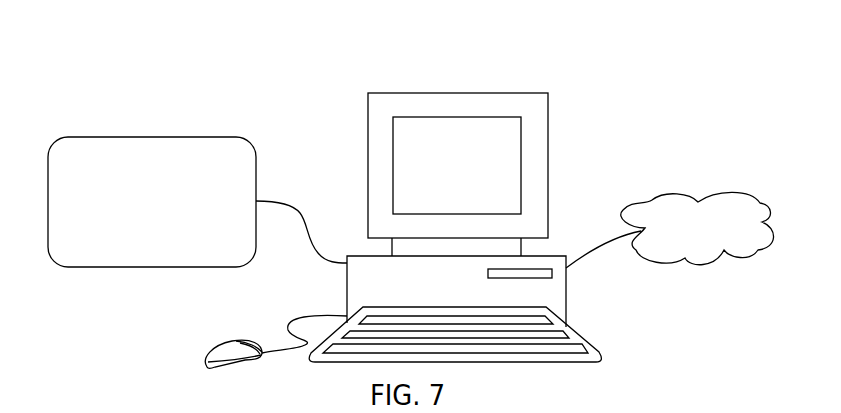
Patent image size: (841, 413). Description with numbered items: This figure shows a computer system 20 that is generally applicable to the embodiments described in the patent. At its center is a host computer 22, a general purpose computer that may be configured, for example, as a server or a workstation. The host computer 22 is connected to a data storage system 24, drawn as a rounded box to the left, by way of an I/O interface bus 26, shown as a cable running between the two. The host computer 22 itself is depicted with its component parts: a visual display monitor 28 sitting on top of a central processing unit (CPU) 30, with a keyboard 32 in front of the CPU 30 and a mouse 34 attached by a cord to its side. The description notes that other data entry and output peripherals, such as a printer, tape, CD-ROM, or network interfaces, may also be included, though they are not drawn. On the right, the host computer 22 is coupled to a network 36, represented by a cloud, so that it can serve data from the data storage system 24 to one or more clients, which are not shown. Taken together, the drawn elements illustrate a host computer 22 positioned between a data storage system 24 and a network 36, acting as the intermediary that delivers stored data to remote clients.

The computer system 20 is at (698, 77).
The host computer 22 is at (453, 84).
The data storage system 24 is at (160, 137).
The I/O interface bus 26 is at (297, 212).
The visual display monitor 28 is at (548, 131).
The central processing unit (CPU) 30 is at (566, 296).
The keyboard 32 is at (597, 349).
The mouse 34 is at (213, 348).
The network 36 is at (727, 197).